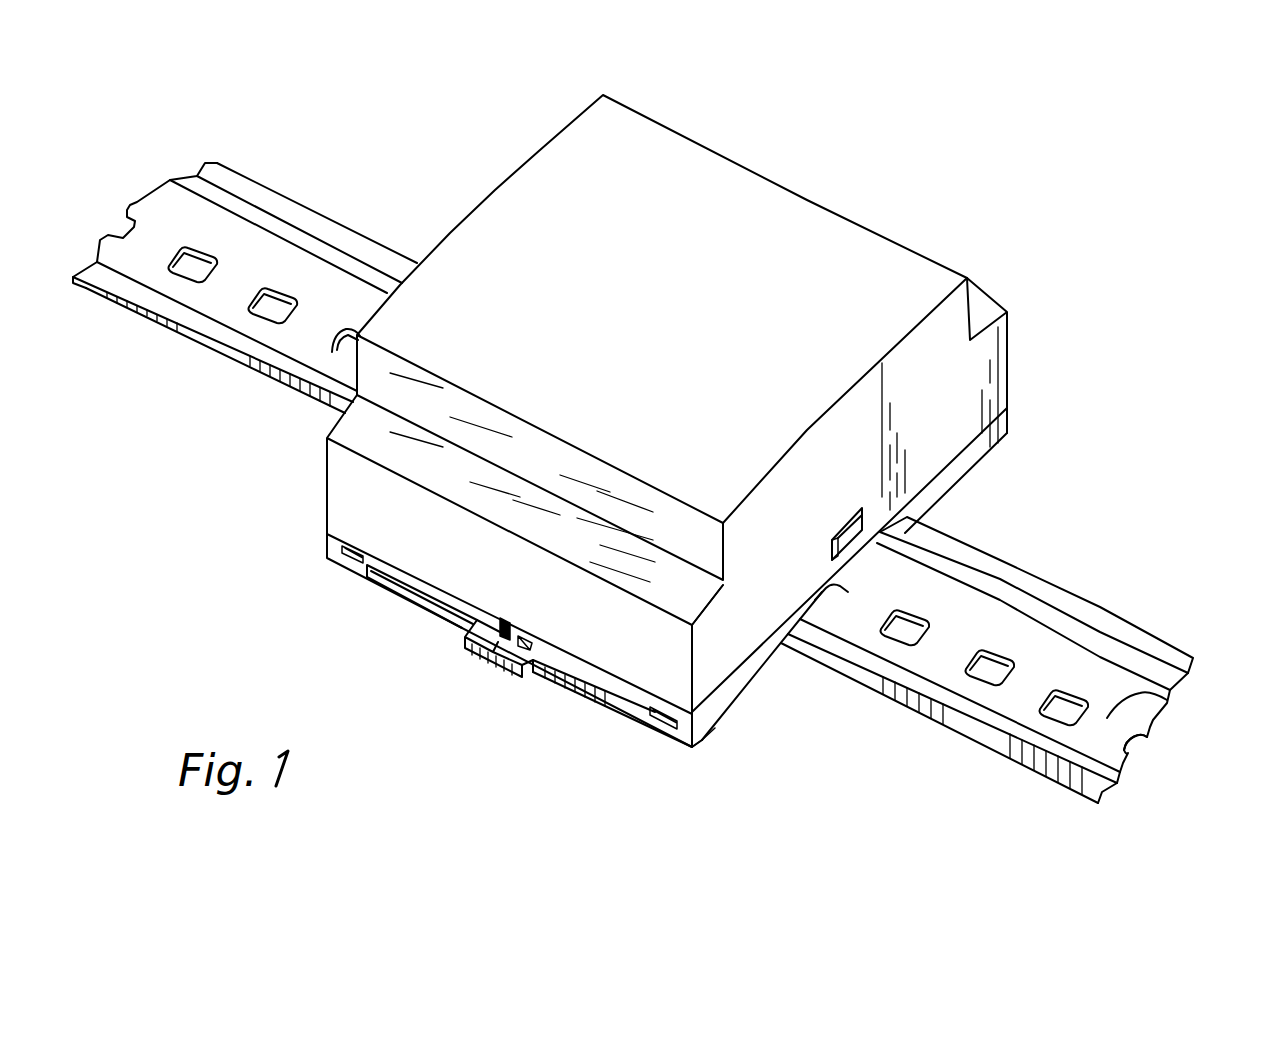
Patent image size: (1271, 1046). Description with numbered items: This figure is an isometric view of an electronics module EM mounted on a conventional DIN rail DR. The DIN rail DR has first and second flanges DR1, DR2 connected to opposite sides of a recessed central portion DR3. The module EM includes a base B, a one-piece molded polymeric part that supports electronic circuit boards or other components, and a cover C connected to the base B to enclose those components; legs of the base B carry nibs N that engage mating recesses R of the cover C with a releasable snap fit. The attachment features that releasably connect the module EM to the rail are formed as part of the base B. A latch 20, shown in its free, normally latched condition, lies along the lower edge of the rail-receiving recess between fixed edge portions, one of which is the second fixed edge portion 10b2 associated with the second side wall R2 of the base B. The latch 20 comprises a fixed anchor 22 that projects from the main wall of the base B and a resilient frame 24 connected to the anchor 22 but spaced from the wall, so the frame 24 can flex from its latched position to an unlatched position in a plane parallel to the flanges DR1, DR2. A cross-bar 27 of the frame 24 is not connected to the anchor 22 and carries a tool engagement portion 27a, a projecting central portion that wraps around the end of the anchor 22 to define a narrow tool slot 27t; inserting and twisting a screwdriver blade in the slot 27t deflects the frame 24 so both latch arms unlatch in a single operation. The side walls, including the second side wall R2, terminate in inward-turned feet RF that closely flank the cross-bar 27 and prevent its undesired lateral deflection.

The cover C is at (985, 362).
The electronics module EM is at (930, 410).
The base B is at (948, 487).
The recess R is at (845, 520).
The nib N is at (832, 548).
The DIN rail DR is at (1018, 675).
The first flange DR1 is at (1055, 600).
The second flange DR2 is at (1063, 760).
The recessed central portion DR3 is at (1167, 705).
The second fixed edge portion 10b2 is at (773, 655).
The second side wall R2 is at (740, 690).
The feet RF is at (342, 563).
The latch 20 is at (514, 657).
The anchor 22 is at (535, 640).
The frame 24 is at (592, 688).
The cross-bar 27 is at (405, 600).
The tool engagement portion 27a is at (497, 663).
The tool slot 27t is at (508, 620).